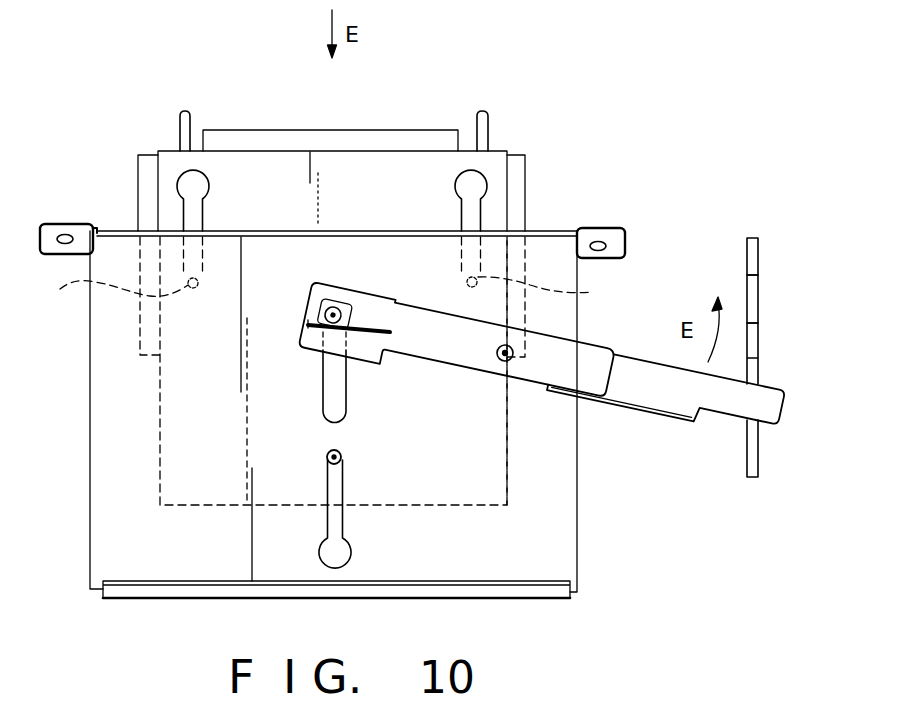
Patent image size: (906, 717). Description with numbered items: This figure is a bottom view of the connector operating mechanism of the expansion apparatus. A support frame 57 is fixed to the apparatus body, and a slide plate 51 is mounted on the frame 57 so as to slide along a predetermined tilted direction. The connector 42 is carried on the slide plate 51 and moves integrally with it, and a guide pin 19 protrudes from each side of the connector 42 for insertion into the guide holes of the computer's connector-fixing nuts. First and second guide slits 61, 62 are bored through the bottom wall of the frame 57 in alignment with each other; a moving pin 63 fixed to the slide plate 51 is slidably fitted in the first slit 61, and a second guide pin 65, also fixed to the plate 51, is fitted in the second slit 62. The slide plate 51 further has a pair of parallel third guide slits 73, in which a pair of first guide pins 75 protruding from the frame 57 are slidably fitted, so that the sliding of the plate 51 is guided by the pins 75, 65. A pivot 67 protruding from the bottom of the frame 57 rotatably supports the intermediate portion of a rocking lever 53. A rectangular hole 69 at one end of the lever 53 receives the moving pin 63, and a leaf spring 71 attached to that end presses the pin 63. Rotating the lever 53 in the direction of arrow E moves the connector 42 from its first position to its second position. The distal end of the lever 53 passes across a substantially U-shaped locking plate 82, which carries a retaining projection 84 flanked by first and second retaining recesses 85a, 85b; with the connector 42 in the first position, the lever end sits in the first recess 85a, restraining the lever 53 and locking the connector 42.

The guide pin 19 is at (180, 114).
The connector 42 is at (333, 148).
The slide plate 51 is at (427, 167).
The rocking lever 53 is at (640, 398).
The support frame 57 is at (561, 532).
The first guide slit 61 is at (343, 410).
The second guide slit 62 is at (340, 517).
The moving pin 63 is at (332, 300).
The second guide pin 65 is at (328, 462).
The pivot 67 is at (514, 347).
The rectangular hole 69 is at (360, 303).
The leaf spring 71 is at (308, 333).
The third guide slits 73 is at (183, 213).
The first guide pins 75 is at (324, 371).
The locking plate 82 is at (758, 240).
The retaining projection 84 is at (758, 360).
The first retaining recess 85a is at (750, 425).
The second retaining recess 85b is at (758, 298).